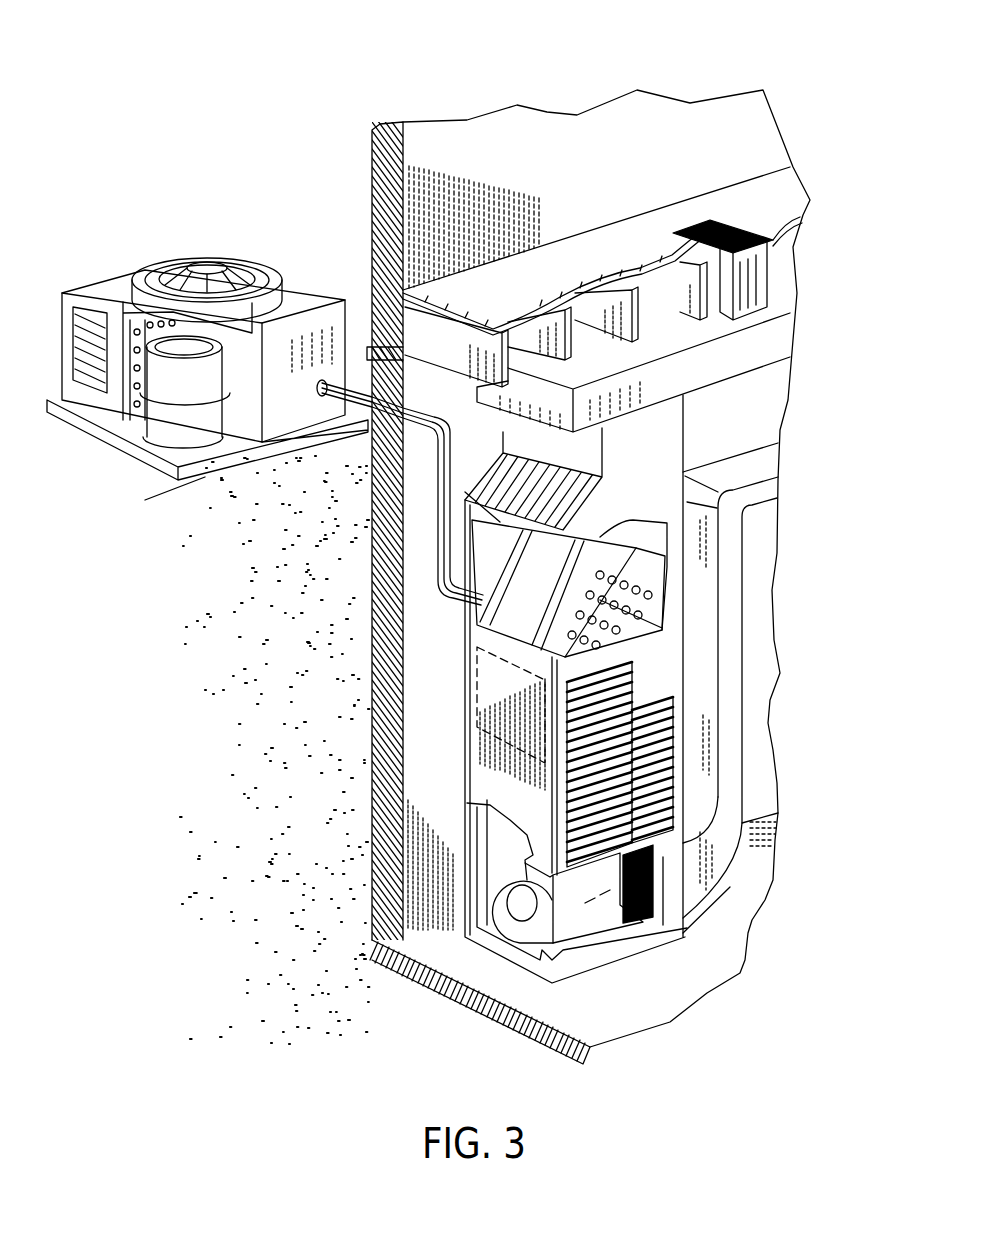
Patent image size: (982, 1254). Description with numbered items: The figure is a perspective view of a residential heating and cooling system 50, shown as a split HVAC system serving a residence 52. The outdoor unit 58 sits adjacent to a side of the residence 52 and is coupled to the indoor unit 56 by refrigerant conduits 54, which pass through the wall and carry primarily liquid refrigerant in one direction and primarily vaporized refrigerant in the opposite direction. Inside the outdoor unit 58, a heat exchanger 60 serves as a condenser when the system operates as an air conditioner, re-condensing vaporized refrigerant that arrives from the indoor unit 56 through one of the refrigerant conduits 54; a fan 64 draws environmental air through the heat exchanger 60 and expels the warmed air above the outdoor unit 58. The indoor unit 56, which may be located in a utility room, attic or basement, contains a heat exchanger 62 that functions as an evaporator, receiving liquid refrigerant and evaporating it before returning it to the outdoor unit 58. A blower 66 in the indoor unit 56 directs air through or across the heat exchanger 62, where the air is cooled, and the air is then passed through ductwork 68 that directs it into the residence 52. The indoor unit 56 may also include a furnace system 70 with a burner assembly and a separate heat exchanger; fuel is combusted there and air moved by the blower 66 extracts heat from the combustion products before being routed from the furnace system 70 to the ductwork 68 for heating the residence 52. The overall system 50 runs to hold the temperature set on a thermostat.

The residential heating and cooling system 50 is at (202, 78).
The residence 52 is at (507, 136).
The refrigerant conduits 54 is at (433, 503).
The indoor unit 56 is at (441, 751).
The outdoor unit 58 is at (168, 240).
The heat exchanger 60 is at (140, 327).
The heat exchanger 62 is at (520, 640).
The fan 64 is at (228, 257).
The blower 66 is at (517, 927).
The ductwork 68 is at (747, 295).
The furnace system 70 is at (477, 693).